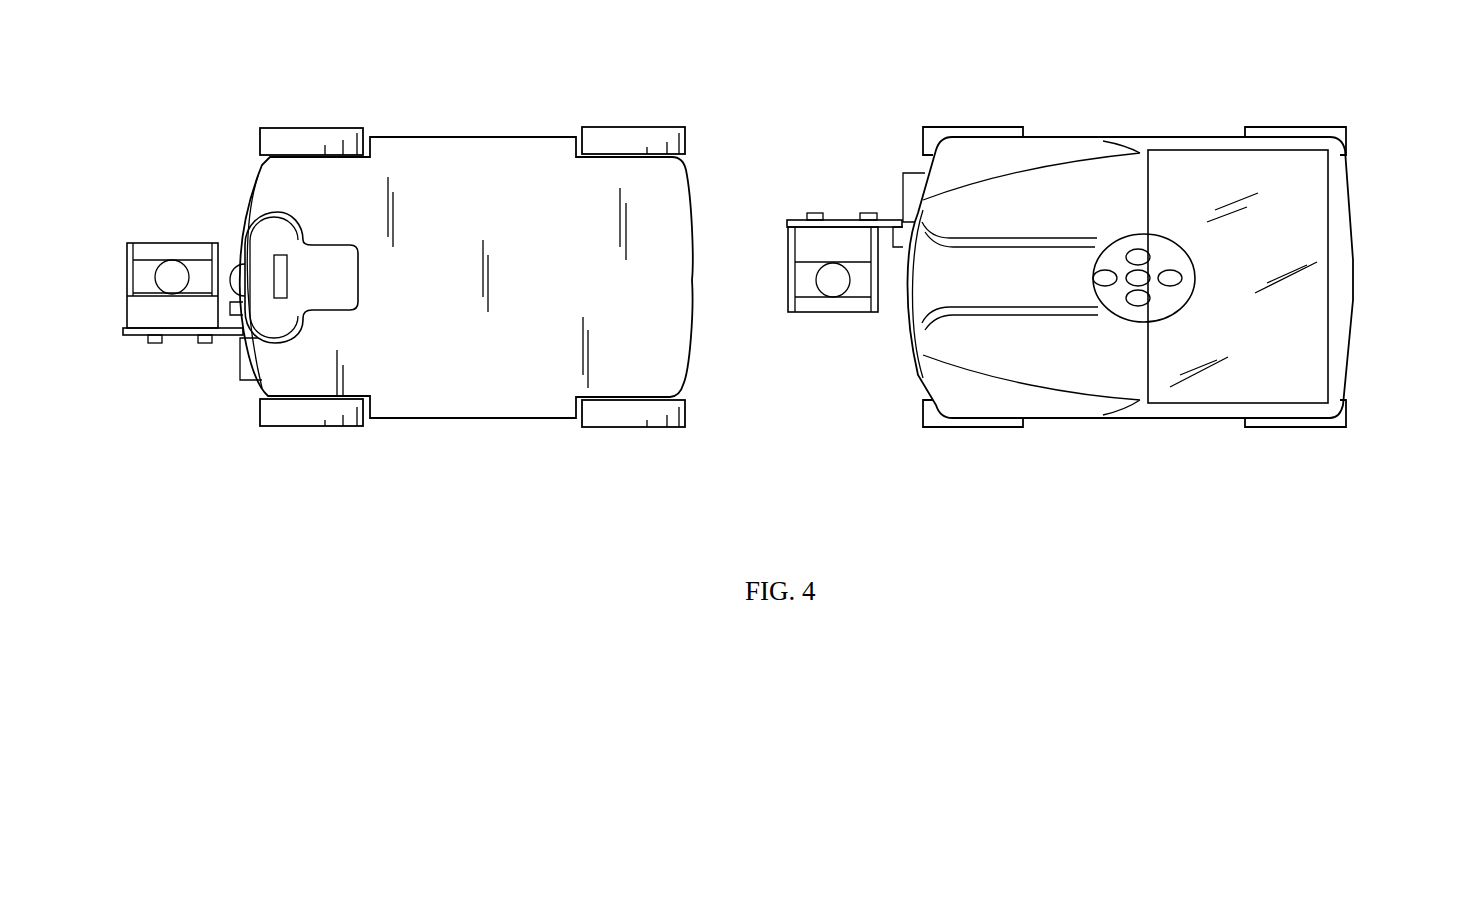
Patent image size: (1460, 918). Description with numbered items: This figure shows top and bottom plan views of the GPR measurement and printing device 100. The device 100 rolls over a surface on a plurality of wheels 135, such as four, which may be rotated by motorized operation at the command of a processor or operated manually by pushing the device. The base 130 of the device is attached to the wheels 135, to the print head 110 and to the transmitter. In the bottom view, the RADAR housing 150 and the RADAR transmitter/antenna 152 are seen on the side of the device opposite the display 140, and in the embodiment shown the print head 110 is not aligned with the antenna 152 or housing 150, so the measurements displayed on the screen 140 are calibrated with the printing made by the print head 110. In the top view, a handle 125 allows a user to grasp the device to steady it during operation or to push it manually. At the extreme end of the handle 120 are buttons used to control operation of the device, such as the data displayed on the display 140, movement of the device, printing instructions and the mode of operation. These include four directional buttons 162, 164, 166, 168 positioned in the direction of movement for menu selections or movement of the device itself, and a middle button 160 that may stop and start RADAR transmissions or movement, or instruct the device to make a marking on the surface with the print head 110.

The device 100 is at (475, 433).
The print head 110 is at (168, 277).
The extreme end of the handle 120 is at (1149, 237).
The handle 125 is at (979, 255).
The base 130 is at (442, 182).
The wheels 135 is at (325, 140).
The display 140 is at (1298, 256).
The RADAR housing 150 is at (263, 232).
The RADAR transmitter/antenna 152 is at (277, 282).
The middle button 160 is at (1140, 277).
The directional button 162 is at (1173, 280).
The directional button 164 is at (1137, 302).
The directional button 166 is at (1098, 275).
The directional button 168 is at (1128, 250).